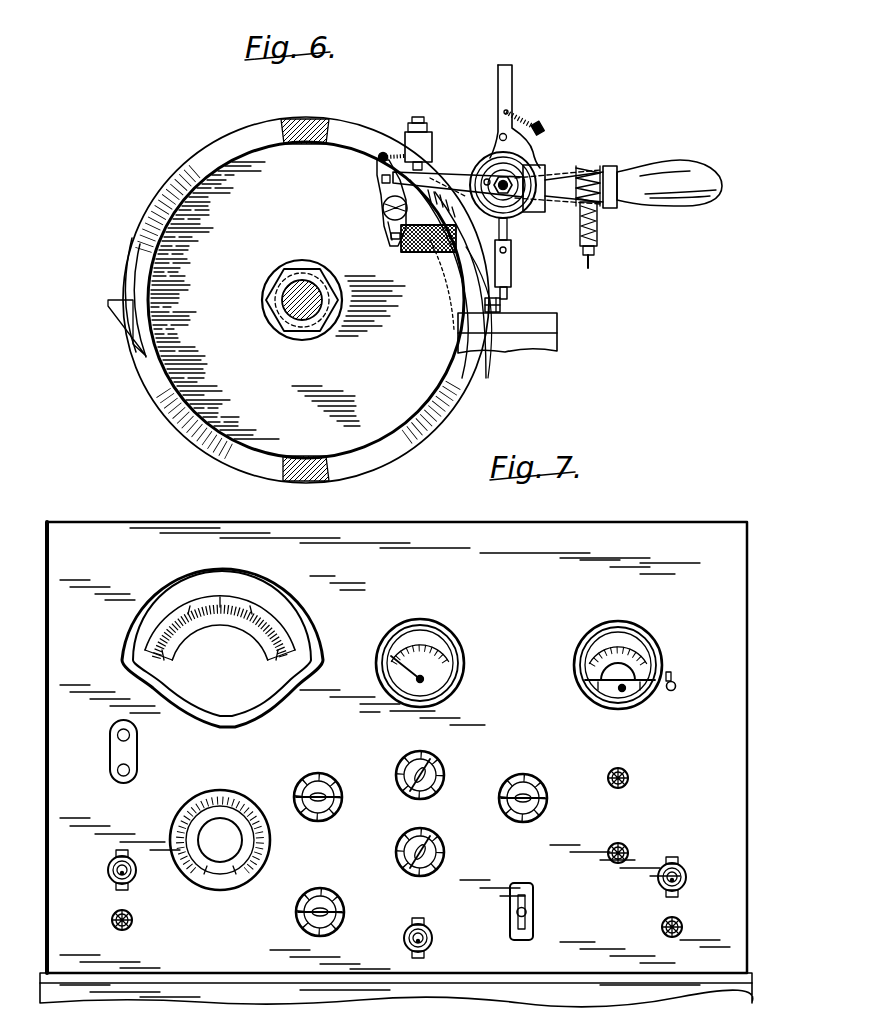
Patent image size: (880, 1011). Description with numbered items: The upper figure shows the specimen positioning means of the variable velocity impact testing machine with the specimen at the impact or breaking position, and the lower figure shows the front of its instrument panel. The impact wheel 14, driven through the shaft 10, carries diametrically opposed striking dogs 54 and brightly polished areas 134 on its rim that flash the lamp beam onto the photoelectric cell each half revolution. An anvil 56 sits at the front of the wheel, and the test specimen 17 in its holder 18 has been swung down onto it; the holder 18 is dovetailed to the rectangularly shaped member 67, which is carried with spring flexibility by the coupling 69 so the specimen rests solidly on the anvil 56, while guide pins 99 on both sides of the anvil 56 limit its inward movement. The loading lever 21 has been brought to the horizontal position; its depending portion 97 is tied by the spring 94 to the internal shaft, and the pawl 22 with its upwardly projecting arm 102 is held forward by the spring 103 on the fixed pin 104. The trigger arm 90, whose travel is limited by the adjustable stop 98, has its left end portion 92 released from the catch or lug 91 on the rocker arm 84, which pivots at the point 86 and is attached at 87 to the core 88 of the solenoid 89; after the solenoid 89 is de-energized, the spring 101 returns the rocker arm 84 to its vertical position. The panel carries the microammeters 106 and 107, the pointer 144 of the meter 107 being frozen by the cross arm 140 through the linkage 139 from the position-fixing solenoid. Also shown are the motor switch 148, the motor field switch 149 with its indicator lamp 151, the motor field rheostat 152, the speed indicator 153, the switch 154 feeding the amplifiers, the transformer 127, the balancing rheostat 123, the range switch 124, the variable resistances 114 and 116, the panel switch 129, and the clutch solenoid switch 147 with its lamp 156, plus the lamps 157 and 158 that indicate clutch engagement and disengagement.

In FIG. 6, the impact wheel 14 is at (190, 204).
In FIG. 6, the shaft 10 is at (290, 310).
In FIG. 6, the striking dogs 54 is at (108, 311).
In FIG. 6, the brightly polished areas 134 is at (300, 122).
In FIG. 6, the trigger arm 90 is at (462, 178).
In FIG. 6, the adjustable stop 98 is at (426, 164).
In FIG. 6, the spring 101 is at (410, 146).
In FIG. 6, the upwardly projecting arm 102 is at (513, 80).
In FIG. 6, the spring 103 is at (522, 120).
In FIG. 6, the fixed pin 104 is at (547, 130).
In FIG. 6, the pawl 22 is at (541, 166).
In FIG. 6, the catch or lug 91 is at (380, 168).
In FIG. 6, the left end portion of trigger arm 92 is at (382, 182).
In FIG. 6, the rocker arm 84 is at (383, 200).
In FIG. 6, the pivot point 86 is at (384, 214).
In FIG. 6, the solenoid core 88 is at (391, 237).
In FIG. 6, the attachment point 87 is at (392, 247).
In FIG. 6, the solenoid 89 is at (430, 254).
In FIG. 6, the guide pins 99 is at (485, 306).
In FIG. 6, the test specimen 17 is at (470, 350).
In FIG. 6, the holder 18 is at (500, 330).
In FIG. 6, the anvil 56 is at (547, 320).
In FIG. 6, the rectangularly shaped member 67 is at (508, 292).
In FIG. 6, the coupling 69 is at (511, 256).
In FIG. 6, the spring 94 is at (603, 184).
In FIG. 6, the loading lever 21 is at (690, 172).
In FIG. 6, the depending portion 97 is at (568, 197).
In FIG. 7, the microammeter 106 is at (445, 636).
In FIG. 7, the microammeter 107 is at (633, 636).
In FIG. 7, the meter pointer 144 is at (586, 680).
In FIG. 7, the linkage 139 is at (674, 684).
In FIG. 7, the cross arm 140 is at (628, 692).
In FIG. 7, the speed indicator 153 is at (232, 700).
In FIG. 7, the motor switch 148 is at (110, 752).
In FIG. 7, the transformer 127 is at (298, 790).
In FIG. 7, the variable rheostat 123 is at (298, 920).
In FIG. 7, the range switch 124 is at (544, 791).
In FIG. 7, the variable resistance 114 is at (444, 768).
In FIG. 7, the variable resistance 116 is at (444, 850).
In FIG. 7, the motor field rheostat 152 is at (215, 850).
In FIG. 7, the motor field switch 149 is at (108, 871).
In FIG. 7, the switch 154 is at (436, 932).
In FIG. 7, the clutch solenoid switch 147 is at (684, 872).
In FIG. 7, the indicating lamp 157 is at (629, 777).
In FIG. 7, the indicating lamp 158 is at (627, 847).
In FIG. 7, the indicator lamp 156 is at (683, 927).
In FIG. 7, the indicator lamp 151 is at (114, 926).
In FIG. 7, the panel switch 129 is at (534, 913).